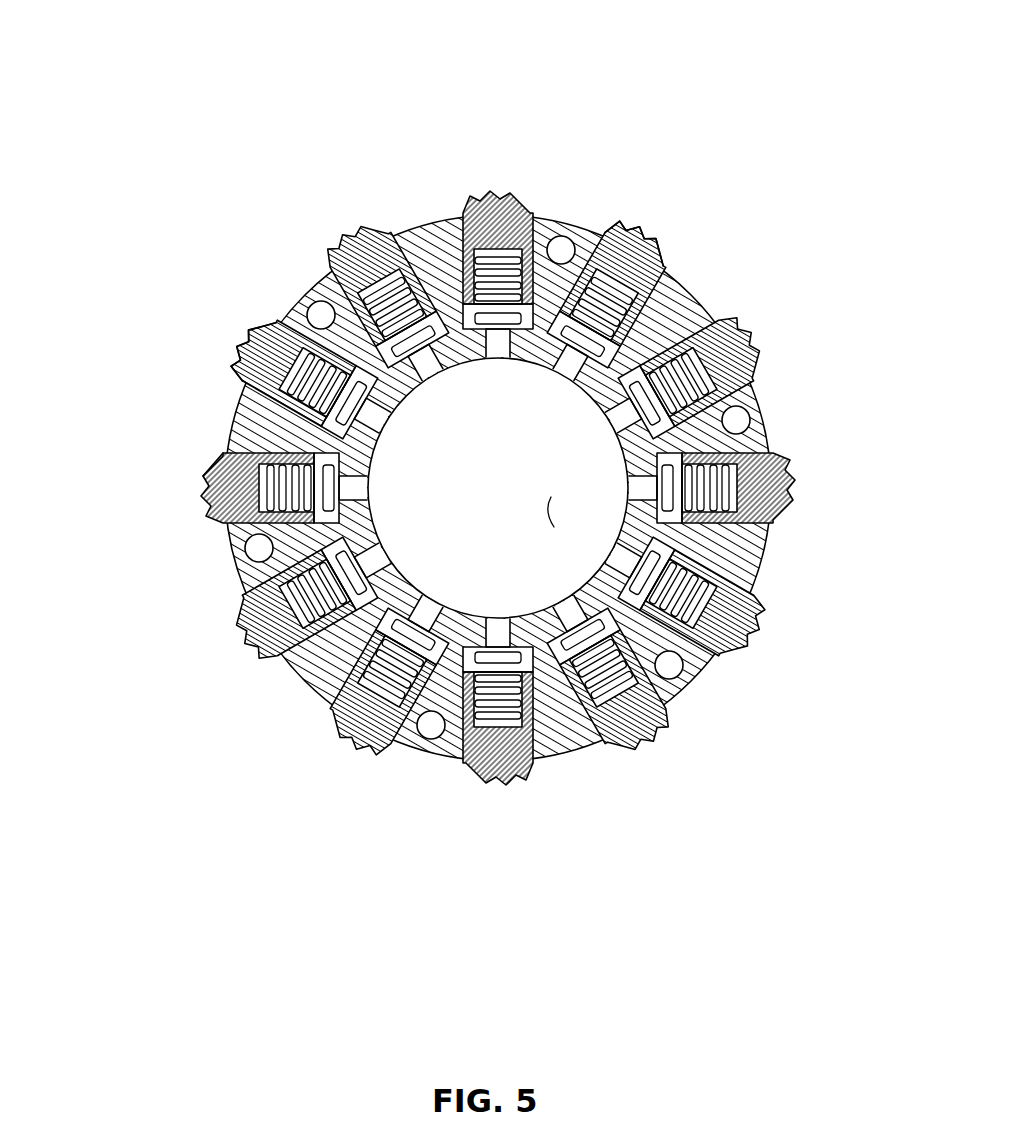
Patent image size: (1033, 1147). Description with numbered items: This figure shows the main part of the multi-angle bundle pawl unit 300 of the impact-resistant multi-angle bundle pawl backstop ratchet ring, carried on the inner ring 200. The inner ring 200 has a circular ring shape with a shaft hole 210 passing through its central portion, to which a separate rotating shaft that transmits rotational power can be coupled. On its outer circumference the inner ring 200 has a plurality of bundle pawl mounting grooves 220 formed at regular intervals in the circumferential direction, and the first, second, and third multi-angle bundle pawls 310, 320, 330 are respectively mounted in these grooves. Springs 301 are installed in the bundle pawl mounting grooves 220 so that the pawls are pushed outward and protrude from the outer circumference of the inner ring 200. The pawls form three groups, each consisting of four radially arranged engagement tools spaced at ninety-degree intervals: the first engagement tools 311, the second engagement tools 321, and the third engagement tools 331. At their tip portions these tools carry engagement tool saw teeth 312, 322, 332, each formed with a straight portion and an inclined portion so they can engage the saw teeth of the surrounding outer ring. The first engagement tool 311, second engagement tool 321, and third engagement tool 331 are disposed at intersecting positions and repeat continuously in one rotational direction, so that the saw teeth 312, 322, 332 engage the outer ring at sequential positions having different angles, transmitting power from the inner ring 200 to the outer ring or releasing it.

The inner ring 200 is at (712, 285).
The shaft hole 210 is at (556, 510).
The bundle pawl mounting grooves 220 is at (572, 238).
The multi-angle bundle pawl unit 300 is at (489, 465).
The springs 301 is at (214, 441).
The first multi-angle bundle pawl 310 is at (489, 476).
The first engagement tool 311 is at (460, 434).
The engagement tool saw teeth 312 is at (588, 228).
The second multi-angle bundle pawl 320 is at (494, 466).
The second engagement tool 321 is at (370, 298).
The engagement tool saw teeth 322 is at (378, 262).
The third multi-angle bundle pawl 330 is at (523, 486).
The third engagement tool 331 is at (250, 330).
The engagement tool saw teeth 332 is at (242, 352).